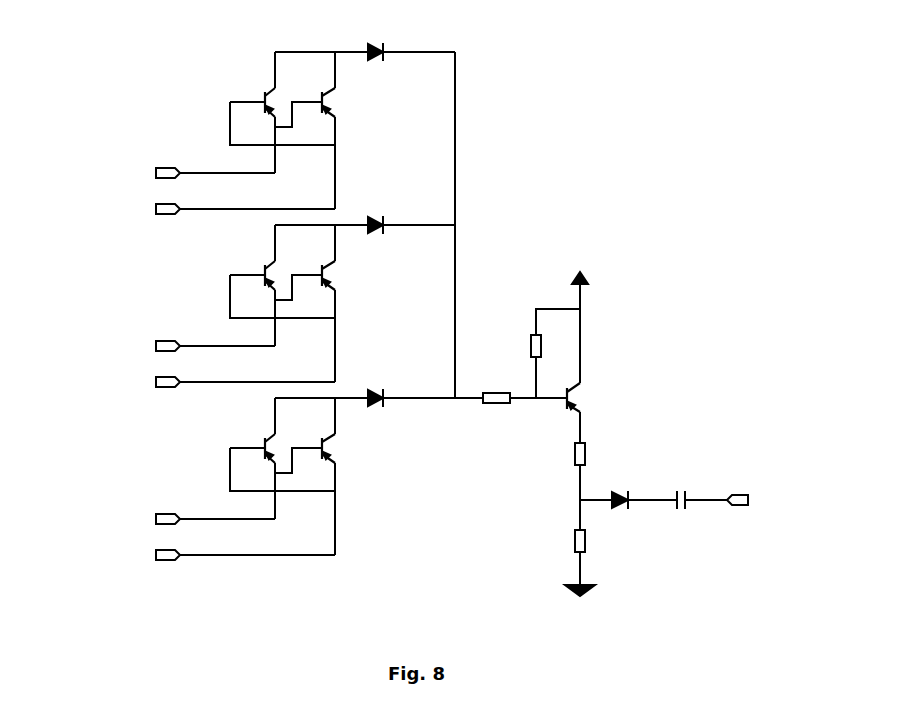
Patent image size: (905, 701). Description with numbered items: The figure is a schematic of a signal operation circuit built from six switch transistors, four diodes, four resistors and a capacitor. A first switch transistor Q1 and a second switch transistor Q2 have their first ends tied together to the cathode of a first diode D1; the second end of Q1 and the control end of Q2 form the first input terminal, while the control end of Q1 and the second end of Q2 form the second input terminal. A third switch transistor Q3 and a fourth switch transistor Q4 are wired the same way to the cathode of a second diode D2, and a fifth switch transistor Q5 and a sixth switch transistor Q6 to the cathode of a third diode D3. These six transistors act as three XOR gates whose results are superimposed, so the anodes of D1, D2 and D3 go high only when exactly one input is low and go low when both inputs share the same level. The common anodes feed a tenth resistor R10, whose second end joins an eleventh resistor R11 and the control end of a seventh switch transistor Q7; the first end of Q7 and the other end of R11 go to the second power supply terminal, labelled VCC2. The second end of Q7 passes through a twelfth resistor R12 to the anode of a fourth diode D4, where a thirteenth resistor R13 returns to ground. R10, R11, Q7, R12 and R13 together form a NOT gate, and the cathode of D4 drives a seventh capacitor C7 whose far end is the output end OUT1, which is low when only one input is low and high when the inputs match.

The first switch transistor Q1 is at (252, 100).
The second switch transistor Q2 is at (345, 102).
The third switch transistor Q3 is at (252, 268).
The fourth switch transistor Q4 is at (340, 275).
The fifth switch transistor Q5 is at (252, 446).
The sixth switch transistor Q6 is at (341, 449).
The seventh switch transistor Q7 is at (576, 398).
The first diode D1 is at (378, 41).
The second diode D2 is at (378, 214).
The third diode D3 is at (378, 387).
The fourth diode D4 is at (620, 486).
The tenth resistor R10 is at (497, 412).
The eleventh resistor R11 is at (515, 346).
The twelfth resistor R12 is at (559, 456).
The thirteenth resistor R13 is at (559, 543).
The seventh capacitor C7 is at (680, 517).
The supply voltage VCC2 is at (587, 259).
The output terminal OUT1 is at (760, 485).